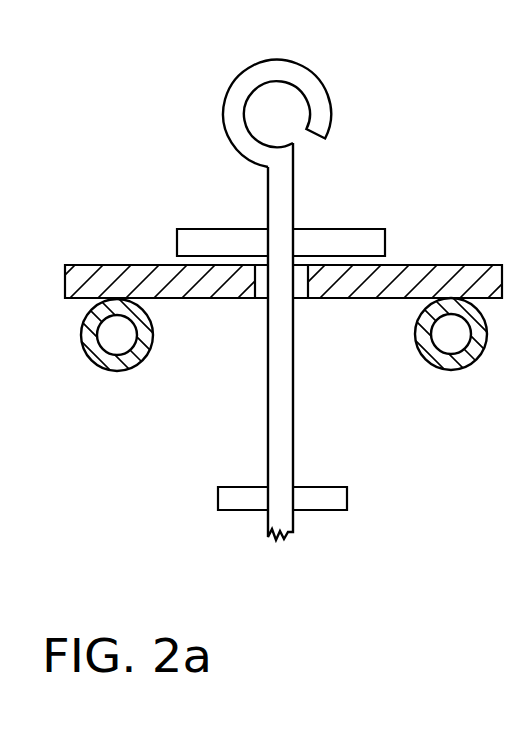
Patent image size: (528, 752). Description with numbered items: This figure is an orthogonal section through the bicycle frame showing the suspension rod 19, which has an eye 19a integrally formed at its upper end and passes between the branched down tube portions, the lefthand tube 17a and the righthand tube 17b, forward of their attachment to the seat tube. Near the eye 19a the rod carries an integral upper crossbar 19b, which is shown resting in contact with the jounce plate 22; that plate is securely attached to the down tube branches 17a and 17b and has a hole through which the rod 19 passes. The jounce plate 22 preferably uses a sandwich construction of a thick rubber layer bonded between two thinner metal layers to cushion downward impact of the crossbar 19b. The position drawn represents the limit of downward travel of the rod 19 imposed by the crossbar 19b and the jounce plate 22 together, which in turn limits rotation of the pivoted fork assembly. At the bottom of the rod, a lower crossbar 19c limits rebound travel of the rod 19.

The suspension rod 19 is at (268, 432).
The eye 19a is at (238, 82).
The upper crossbar 19b is at (355, 228).
The lower crossbar 19c is at (322, 487).
The jounce plate 22 is at (98, 265).
The lefthand tube 17a is at (115, 372).
The righthand tube 17b is at (417, 333).